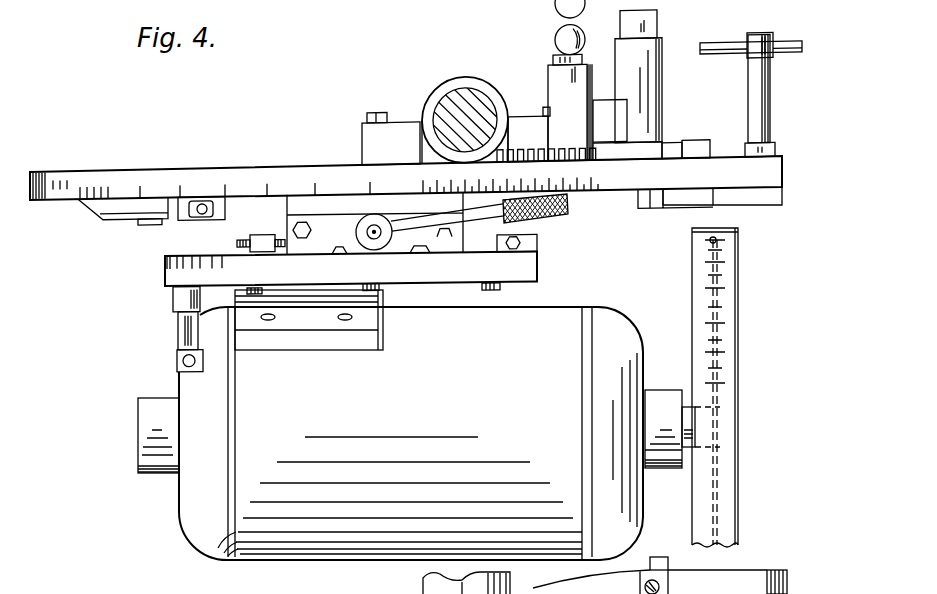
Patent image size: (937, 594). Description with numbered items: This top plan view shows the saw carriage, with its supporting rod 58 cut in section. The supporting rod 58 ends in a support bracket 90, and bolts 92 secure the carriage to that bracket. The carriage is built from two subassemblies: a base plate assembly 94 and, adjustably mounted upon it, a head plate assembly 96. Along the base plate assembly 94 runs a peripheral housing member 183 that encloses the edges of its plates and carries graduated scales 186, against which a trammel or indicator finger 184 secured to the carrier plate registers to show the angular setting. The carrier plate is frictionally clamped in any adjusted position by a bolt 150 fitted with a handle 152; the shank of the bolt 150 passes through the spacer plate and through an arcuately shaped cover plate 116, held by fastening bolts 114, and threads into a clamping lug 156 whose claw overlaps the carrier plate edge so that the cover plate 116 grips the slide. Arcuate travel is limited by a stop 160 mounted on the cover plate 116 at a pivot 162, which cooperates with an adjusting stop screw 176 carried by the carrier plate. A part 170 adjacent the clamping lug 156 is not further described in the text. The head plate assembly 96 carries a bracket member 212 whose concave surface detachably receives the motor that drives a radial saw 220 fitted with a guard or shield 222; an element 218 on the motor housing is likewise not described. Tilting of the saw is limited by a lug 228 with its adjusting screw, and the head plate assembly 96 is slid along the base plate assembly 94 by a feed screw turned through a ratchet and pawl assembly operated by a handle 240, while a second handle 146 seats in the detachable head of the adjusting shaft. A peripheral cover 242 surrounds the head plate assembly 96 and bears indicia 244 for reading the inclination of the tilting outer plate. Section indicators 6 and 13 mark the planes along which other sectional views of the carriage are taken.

The base plate assembly 94 is at (256, 160).
The graduated scales 186 is at (97, 188).
The peripheral housing member 183 is at (152, 183).
The adjusting stop screw 176 is at (203, 208).
The trammel or indicator finger 184 is at (120, 224).
The support bracket 90 is at (372, 152).
The bolts 92 is at (372, 122).
The supporting rod 58 is at (472, 109).
The handle 146 is at (573, 43).
The handle 152 is at (722, 59).
The bolt 150 is at (758, 112).
The stop 160 is at (657, 216).
The block 170 is at (688, 197).
The clamping lug 156 is at (740, 203).
The head plate assembly 96 is at (551, 276).
The indicia 244 is at (183, 268).
The lug 228 is at (267, 248).
The handle 240 is at (550, 228).
The peripheral cover 242 is at (465, 272).
The bracket member 212 is at (298, 337).
The motor 218 is at (275, 532).
The guard or shield 222 is at (728, 283).
The radial saw 220 is at (730, 320).
The section line 6 is at (375, 110).
The section line 13 is at (657, 557).
The fastening bolts 114 is at (537, 593).
The cover plate 116 is at (572, 593).
The pivot 162 is at (644, 587).